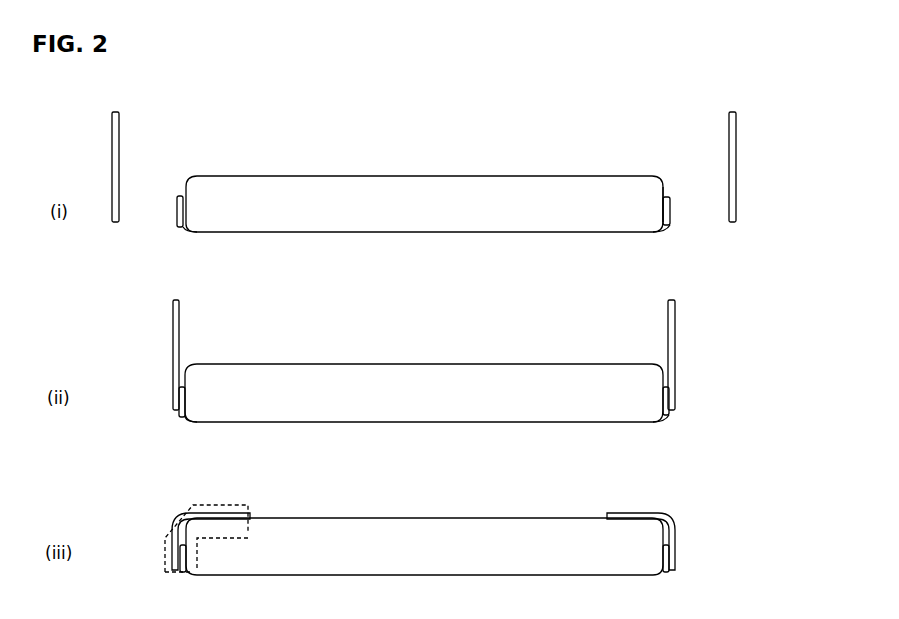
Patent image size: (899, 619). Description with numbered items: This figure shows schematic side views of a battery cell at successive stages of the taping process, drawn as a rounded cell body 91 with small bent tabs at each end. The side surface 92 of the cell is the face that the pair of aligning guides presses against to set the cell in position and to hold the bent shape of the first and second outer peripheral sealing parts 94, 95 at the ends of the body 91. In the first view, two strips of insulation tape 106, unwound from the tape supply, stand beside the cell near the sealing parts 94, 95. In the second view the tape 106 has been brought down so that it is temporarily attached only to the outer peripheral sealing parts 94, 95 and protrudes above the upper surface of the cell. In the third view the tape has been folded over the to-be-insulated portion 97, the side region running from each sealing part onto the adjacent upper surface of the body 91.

The battery cell body 91 is at (584, 176).
The side surface 92 is at (693, 216).
The first outer peripheral sealing part 94 is at (177, 212).
The second outer peripheral sealing part 95 is at (670, 226).
The to-be-insulated portion 97 is at (156, 562).
The insulation tape 106 is at (736, 148).